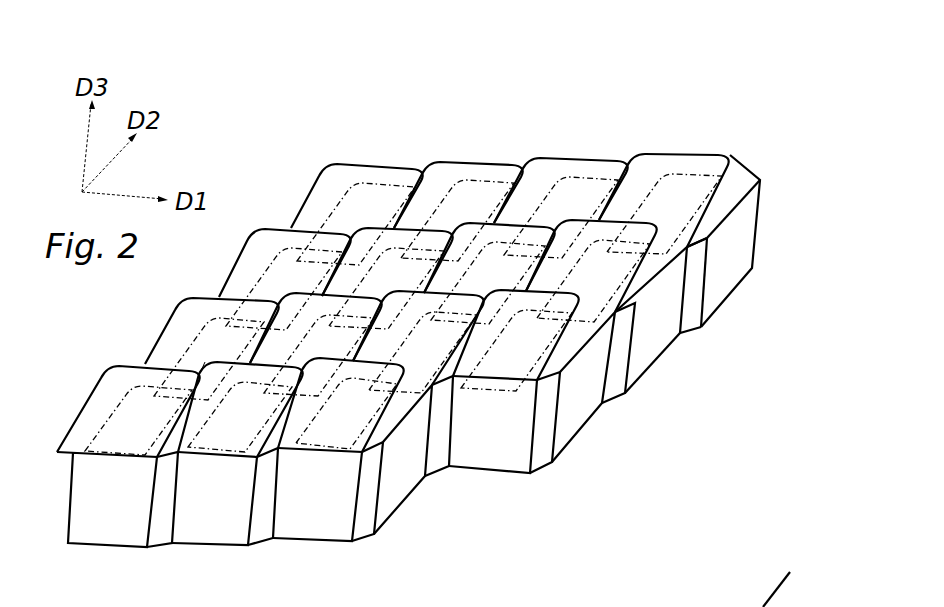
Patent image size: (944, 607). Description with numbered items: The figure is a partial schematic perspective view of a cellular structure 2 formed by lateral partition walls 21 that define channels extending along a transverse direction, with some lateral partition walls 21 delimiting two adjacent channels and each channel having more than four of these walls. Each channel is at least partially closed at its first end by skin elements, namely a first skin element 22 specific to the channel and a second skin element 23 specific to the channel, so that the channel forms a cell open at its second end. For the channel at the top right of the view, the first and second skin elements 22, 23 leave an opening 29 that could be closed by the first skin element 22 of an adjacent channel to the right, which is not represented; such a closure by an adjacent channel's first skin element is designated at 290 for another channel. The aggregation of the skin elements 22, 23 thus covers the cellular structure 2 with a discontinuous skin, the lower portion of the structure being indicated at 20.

The cellular structure 2 is at (253, 103).
The base 20 is at (726, 589).
The lateral partition walls 21 is at (398, 450).
The first skin element 22 is at (393, 267).
The second skin element 23 is at (432, 283).
The opening 29 is at (698, 254).
The closure of an opening by an adjacent channel's first skin element 290 is at (228, 374).